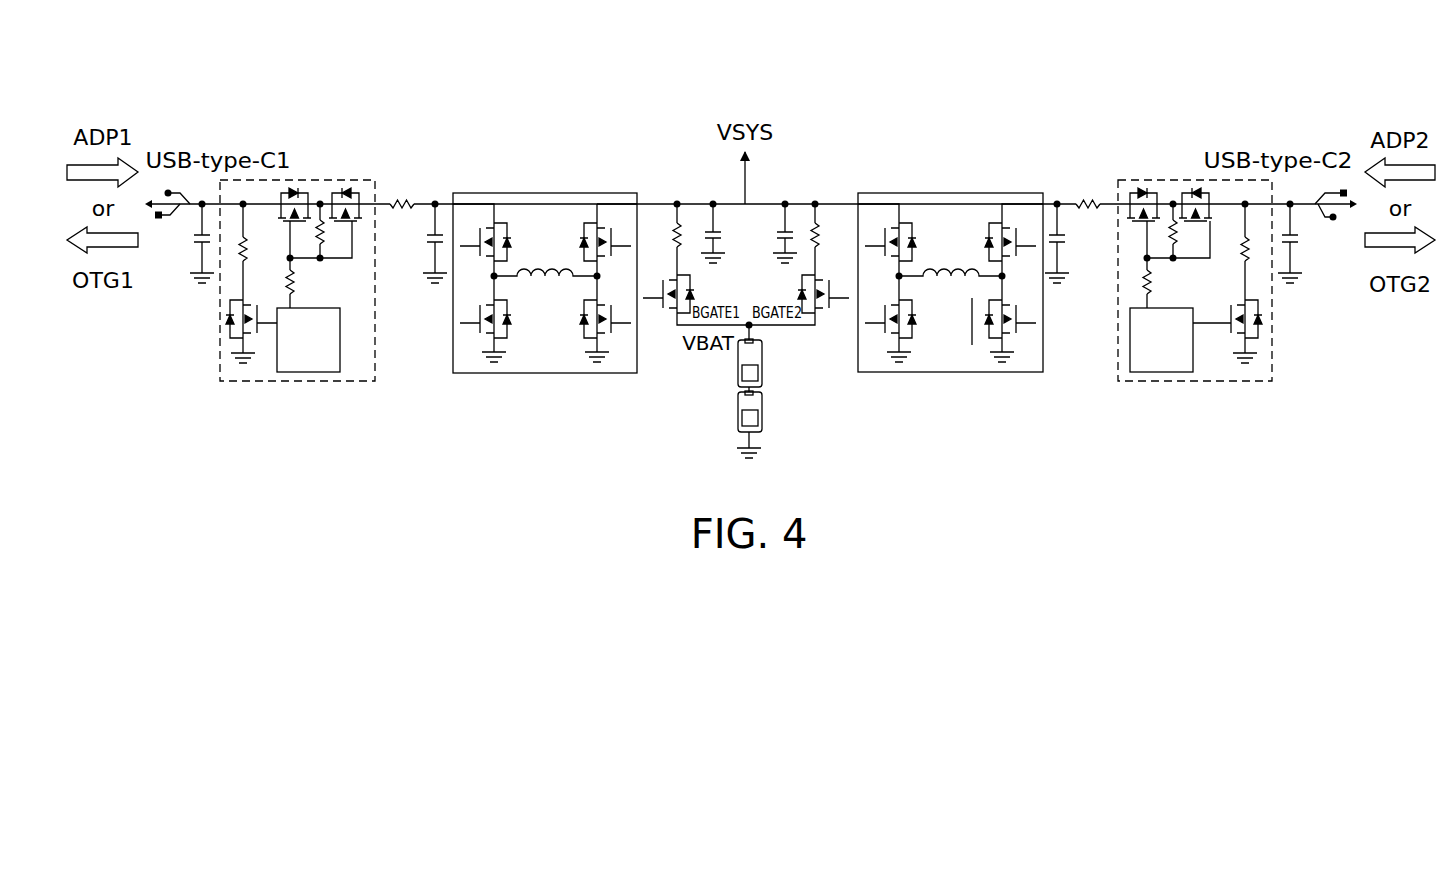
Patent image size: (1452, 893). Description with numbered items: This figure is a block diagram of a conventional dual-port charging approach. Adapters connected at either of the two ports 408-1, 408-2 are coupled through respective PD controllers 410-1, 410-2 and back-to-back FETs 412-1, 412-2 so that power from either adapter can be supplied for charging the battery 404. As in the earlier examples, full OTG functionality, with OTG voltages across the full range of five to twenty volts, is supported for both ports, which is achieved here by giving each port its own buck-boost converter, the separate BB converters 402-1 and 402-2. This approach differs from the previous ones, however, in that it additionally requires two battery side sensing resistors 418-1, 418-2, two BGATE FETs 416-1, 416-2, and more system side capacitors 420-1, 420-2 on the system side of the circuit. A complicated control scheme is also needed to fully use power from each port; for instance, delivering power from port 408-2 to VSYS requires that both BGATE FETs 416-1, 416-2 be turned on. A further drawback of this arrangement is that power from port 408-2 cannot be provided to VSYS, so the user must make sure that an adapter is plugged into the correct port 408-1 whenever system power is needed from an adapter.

The BB converter 402-1 is at (545, 193).
The BB converter 402-2 is at (977, 193).
The battery 404 is at (723, 408).
The port 408-1 is at (299, 257).
The port 408-2 is at (1219, 257).
The PD controller 410-1 is at (310, 375).
The PD controller 410-2 is at (1162, 375).
The back-to-back FETs 412-1 is at (337, 180).
The back-to-back FETs 412-2 is at (1137, 180).
The BGATE FET 416-1 is at (670, 328).
The BGATE FET 416-2 is at (824, 328).
The battery side sensing resistor 418-1 is at (677, 213).
The battery side sensing resistor 418-2 is at (817, 208).
The system side capacitor 420-1 is at (734, 242).
The system side capacitor 420-2 is at (771, 242).